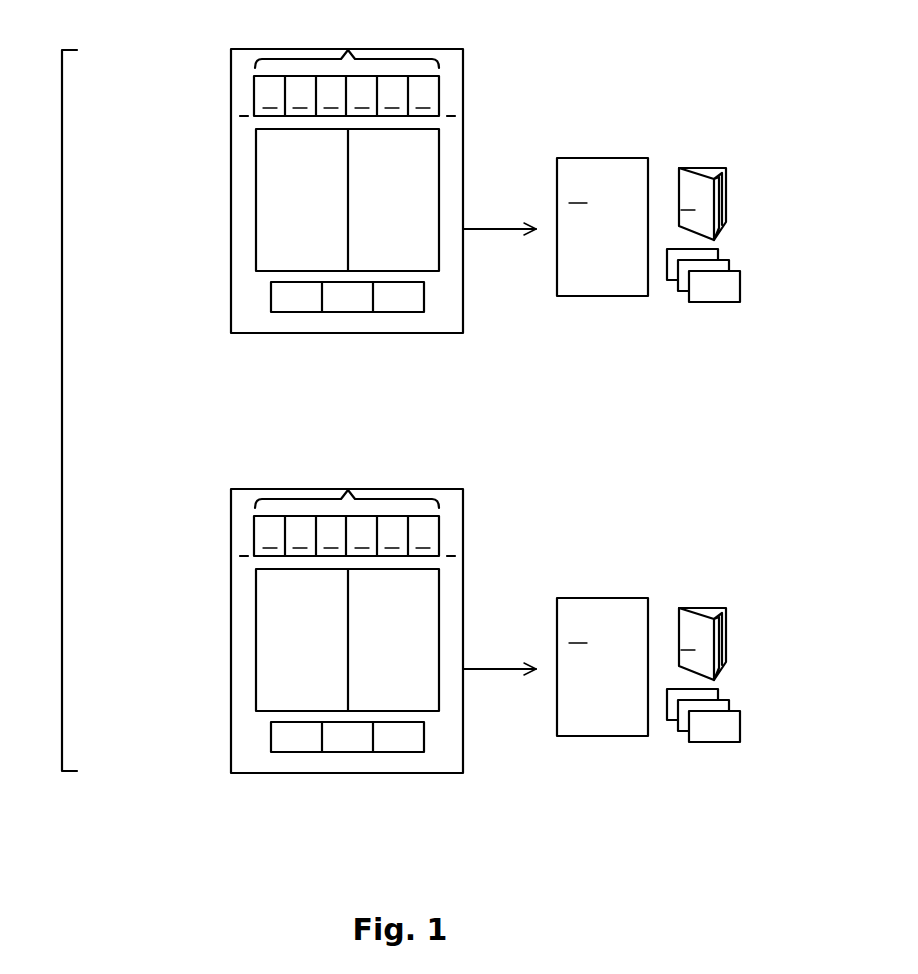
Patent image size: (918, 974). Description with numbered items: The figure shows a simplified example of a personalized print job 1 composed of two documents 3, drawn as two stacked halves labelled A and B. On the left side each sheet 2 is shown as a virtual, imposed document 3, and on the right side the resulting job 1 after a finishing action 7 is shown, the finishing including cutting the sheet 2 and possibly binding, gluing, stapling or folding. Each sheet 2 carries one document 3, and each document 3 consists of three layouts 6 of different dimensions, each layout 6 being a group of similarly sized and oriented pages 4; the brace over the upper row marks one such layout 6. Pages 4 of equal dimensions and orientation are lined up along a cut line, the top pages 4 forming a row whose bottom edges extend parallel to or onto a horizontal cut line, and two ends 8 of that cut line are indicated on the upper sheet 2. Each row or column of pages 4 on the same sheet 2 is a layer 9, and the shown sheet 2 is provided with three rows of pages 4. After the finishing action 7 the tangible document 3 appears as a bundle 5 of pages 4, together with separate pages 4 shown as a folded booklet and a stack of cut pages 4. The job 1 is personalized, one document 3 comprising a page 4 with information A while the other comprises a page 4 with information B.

The job 1 is at (62, 410).
The sheet 2 is at (231, 187).
The document 3 is at (208, 243).
The page 4 is at (297, 300).
The bundle 5 is at (628, 316).
The layout 6 is at (347, 264).
The finishing action 7 is at (503, 232).
The ends of a cut line 8 is at (237, 118).
The layer 9 is at (252, 92).